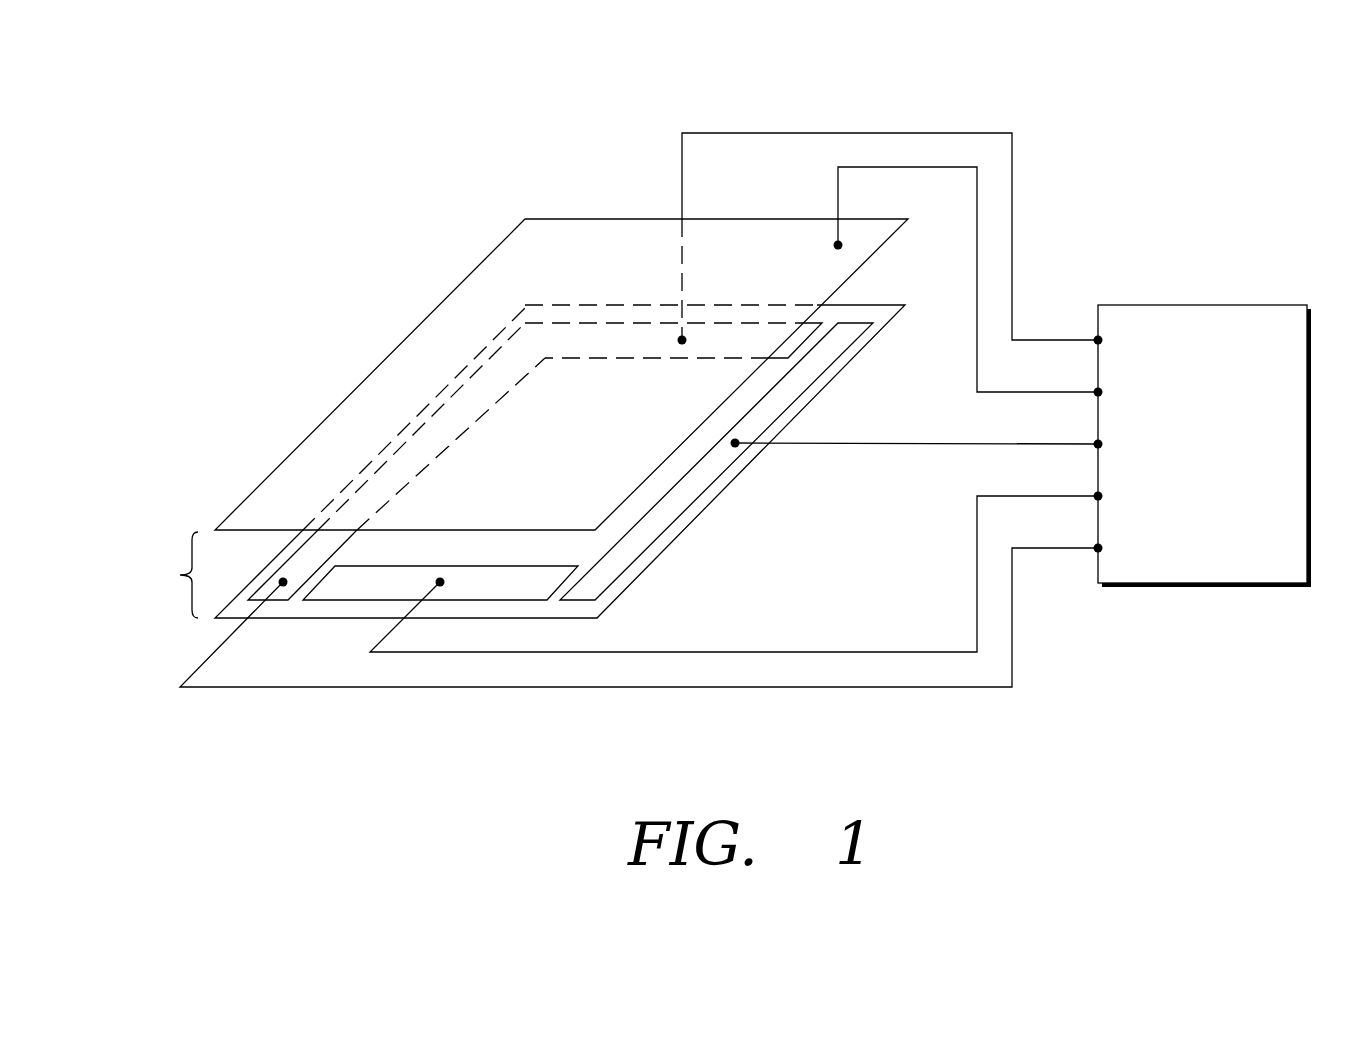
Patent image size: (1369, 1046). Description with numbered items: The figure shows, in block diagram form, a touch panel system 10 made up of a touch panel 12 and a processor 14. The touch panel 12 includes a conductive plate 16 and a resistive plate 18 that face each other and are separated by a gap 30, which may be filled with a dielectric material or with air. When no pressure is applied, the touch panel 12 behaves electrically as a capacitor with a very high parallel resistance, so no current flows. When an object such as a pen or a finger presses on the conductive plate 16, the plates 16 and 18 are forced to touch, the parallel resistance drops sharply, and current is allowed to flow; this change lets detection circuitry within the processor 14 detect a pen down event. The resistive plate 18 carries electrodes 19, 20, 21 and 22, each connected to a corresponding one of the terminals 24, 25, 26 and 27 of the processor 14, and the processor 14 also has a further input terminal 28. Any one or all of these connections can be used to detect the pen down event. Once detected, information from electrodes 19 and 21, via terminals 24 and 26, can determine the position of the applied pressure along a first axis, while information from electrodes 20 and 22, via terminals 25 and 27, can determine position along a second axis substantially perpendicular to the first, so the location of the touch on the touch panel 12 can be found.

The touch panel system 10 is at (1195, 78).
The touch panel 12 is at (512, 168).
The processor 14 is at (1272, 497).
The conductive plate 16 is at (422, 324).
The resistive plate 18 is at (308, 620).
The electrode 19 is at (275, 578).
The electrode 20 is at (503, 566).
The electrode 21 is at (678, 521).
The electrode 22 is at (640, 360).
The terminal 24 is at (1102, 550).
The terminal 25 is at (1102, 498).
The terminal 26 is at (1102, 446).
The terminal 27 is at (1102, 340).
The input terminal 28 is at (1102, 391).
The gap 30 is at (170, 575).